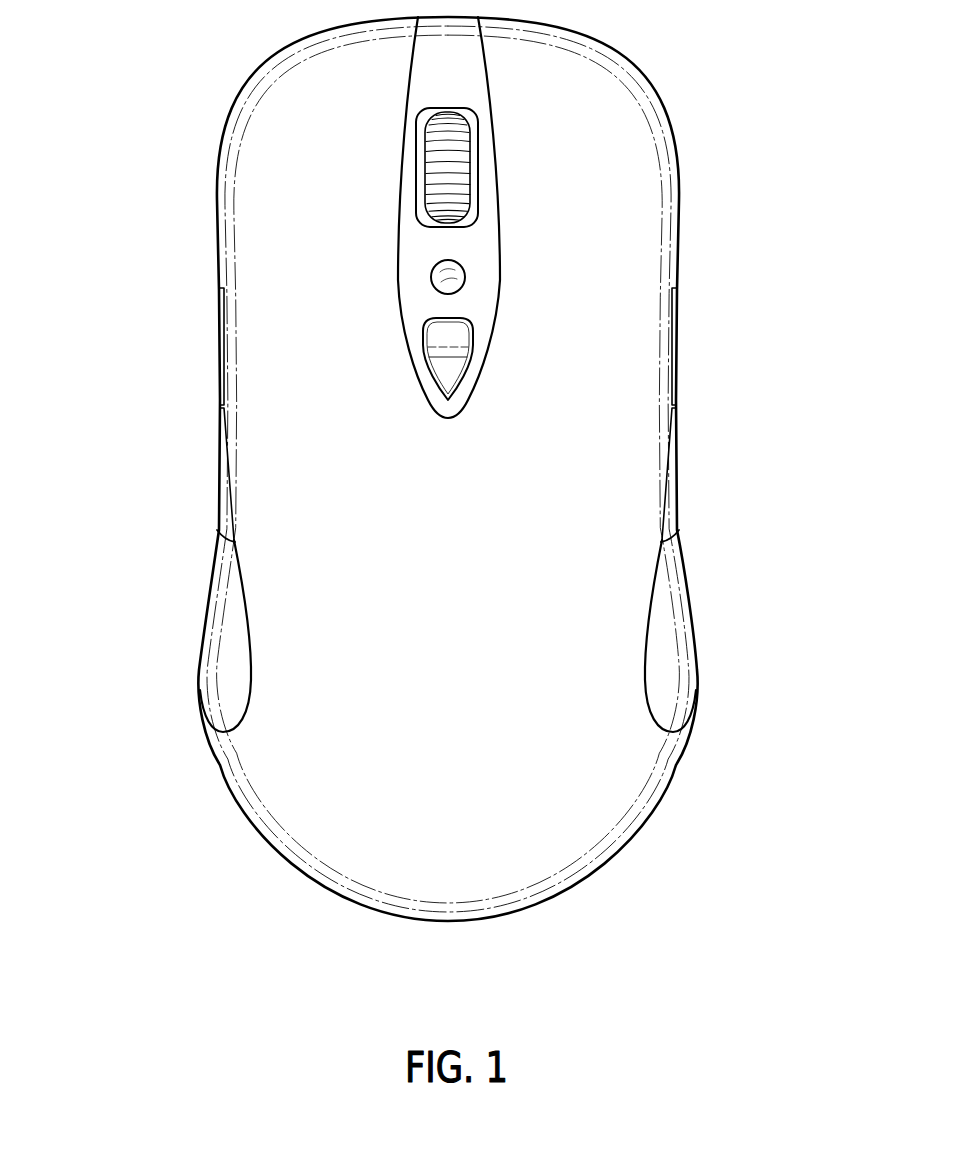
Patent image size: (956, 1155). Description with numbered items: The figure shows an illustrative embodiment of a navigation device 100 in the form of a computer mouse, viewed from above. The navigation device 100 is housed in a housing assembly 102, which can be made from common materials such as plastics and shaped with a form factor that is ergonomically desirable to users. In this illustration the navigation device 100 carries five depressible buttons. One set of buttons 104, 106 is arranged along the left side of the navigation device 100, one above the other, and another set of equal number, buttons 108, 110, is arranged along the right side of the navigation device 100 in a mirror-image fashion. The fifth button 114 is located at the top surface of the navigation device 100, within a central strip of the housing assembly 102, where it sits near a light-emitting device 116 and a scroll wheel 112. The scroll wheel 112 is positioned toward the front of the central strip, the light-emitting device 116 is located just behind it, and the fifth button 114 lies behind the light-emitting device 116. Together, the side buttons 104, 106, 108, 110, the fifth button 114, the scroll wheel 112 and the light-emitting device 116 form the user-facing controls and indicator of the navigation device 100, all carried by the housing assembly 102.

The navigation device 100 is at (450, 505).
The housing assembly 102 is at (227, 118).
The button 104 is at (223, 347).
The button 106 is at (226, 489).
The button 108 is at (677, 358).
The button 110 is at (677, 441).
The scroll wheel 112 is at (447, 167).
The fifth button 114 is at (448, 338).
The light-emitting device 116 is at (457, 275).